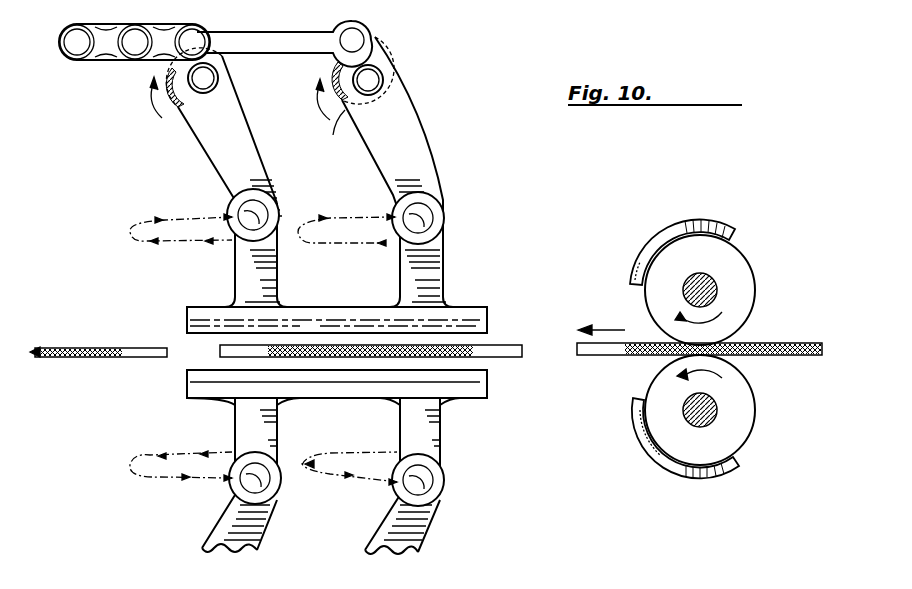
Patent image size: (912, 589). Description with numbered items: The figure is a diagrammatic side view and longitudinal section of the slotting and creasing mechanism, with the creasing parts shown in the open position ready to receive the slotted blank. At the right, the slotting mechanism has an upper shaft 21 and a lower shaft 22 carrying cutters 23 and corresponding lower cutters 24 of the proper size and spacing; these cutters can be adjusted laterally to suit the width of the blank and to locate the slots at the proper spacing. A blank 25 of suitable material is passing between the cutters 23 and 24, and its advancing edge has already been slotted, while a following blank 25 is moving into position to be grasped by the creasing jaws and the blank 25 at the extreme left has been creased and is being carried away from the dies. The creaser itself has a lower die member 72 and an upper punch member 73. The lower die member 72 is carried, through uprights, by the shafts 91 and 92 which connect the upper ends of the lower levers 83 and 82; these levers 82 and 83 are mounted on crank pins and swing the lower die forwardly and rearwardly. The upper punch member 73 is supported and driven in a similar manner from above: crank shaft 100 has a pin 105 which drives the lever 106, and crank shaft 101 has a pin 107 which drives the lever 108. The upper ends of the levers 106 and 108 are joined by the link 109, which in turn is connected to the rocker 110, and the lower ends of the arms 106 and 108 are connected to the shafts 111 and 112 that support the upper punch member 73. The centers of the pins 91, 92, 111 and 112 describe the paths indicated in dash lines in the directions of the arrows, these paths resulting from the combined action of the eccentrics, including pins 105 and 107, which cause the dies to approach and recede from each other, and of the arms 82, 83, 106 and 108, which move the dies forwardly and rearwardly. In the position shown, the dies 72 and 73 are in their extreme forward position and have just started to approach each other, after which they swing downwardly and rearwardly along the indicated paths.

The shaft 21 is at (712, 284).
The shaft 22 is at (718, 412).
The cutter 23 is at (665, 238).
The lower cutter 24 is at (664, 455).
The blank 25 is at (70, 350).
The lower die member 72 is at (242, 377).
The upper punch member 73 is at (217, 322).
The lever 82 is at (223, 522).
The lever 83 is at (420, 523).
The shaft 91 is at (430, 482).
The shaft 92 is at (265, 480).
The crank shaft 100 is at (178, 113).
The crank shaft 101 is at (345, 110).
The pin 105 is at (206, 78).
The lever 106 is at (225, 168).
The pin 107 is at (372, 80).
The lever 108 is at (410, 150).
The link 109 is at (297, 42).
The rocker 110 is at (108, 55).
The shaft 111 is at (273, 227).
The shaft 112 is at (428, 222).